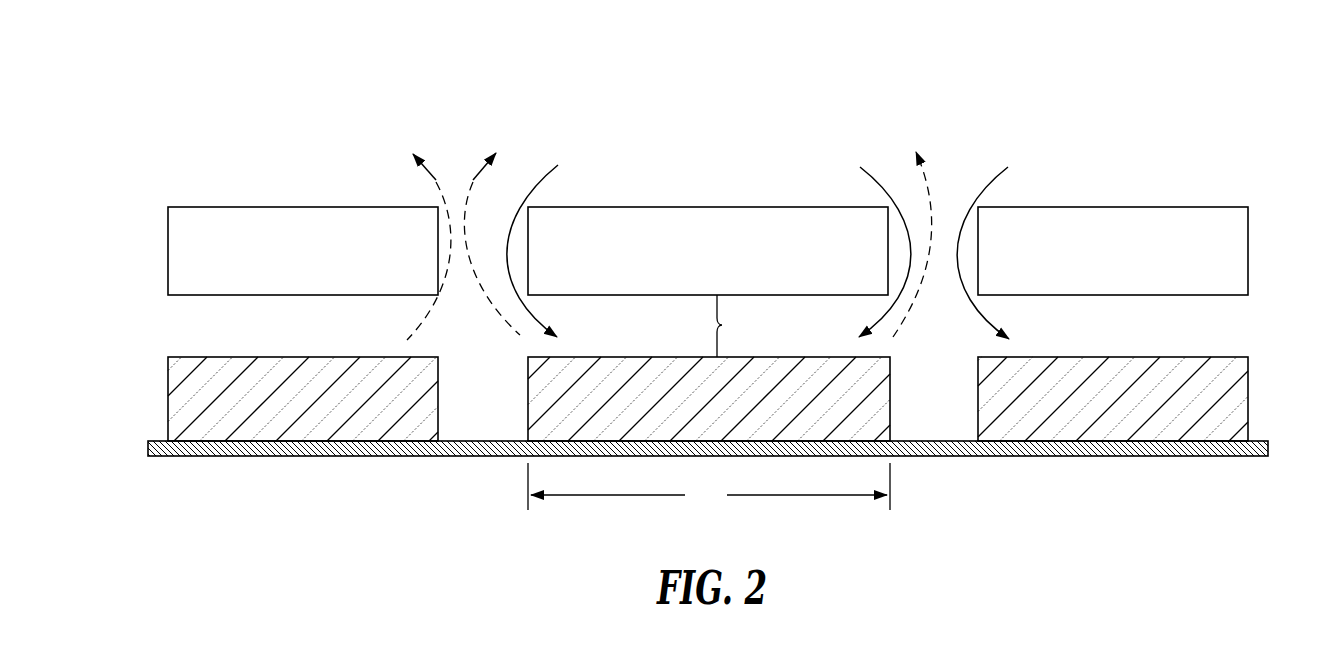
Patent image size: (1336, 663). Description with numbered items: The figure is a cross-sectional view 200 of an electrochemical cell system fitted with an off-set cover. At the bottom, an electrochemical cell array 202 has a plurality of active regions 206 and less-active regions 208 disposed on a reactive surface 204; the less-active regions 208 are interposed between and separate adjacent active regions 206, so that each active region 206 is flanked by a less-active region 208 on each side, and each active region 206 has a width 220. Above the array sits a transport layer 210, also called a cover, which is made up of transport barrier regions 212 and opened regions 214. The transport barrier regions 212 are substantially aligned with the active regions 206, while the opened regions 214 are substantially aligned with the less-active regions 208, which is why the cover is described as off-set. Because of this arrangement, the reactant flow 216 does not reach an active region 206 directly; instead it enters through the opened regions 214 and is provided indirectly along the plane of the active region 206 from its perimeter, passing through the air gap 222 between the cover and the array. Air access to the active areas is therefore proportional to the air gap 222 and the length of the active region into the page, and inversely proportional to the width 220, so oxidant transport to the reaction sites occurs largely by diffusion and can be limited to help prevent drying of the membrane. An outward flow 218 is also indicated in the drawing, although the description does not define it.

The cross-sectional view 200 is at (1221, 72).
The electrochemical cell array 202 is at (1280, 297).
The reactive surface 204 is at (146, 371).
The active region 206 is at (877, 423).
The less-active region 208 is at (468, 425).
The transport layer 210 is at (1278, 168).
The transport barrier region 212 is at (700, 222).
The opened region 214 is at (980, 152).
The reactant flow 216 is at (542, 180).
The exhaust airflow 218 is at (473, 180).
The width of the active region 220 is at (709, 486).
The air gap 222 is at (739, 326).